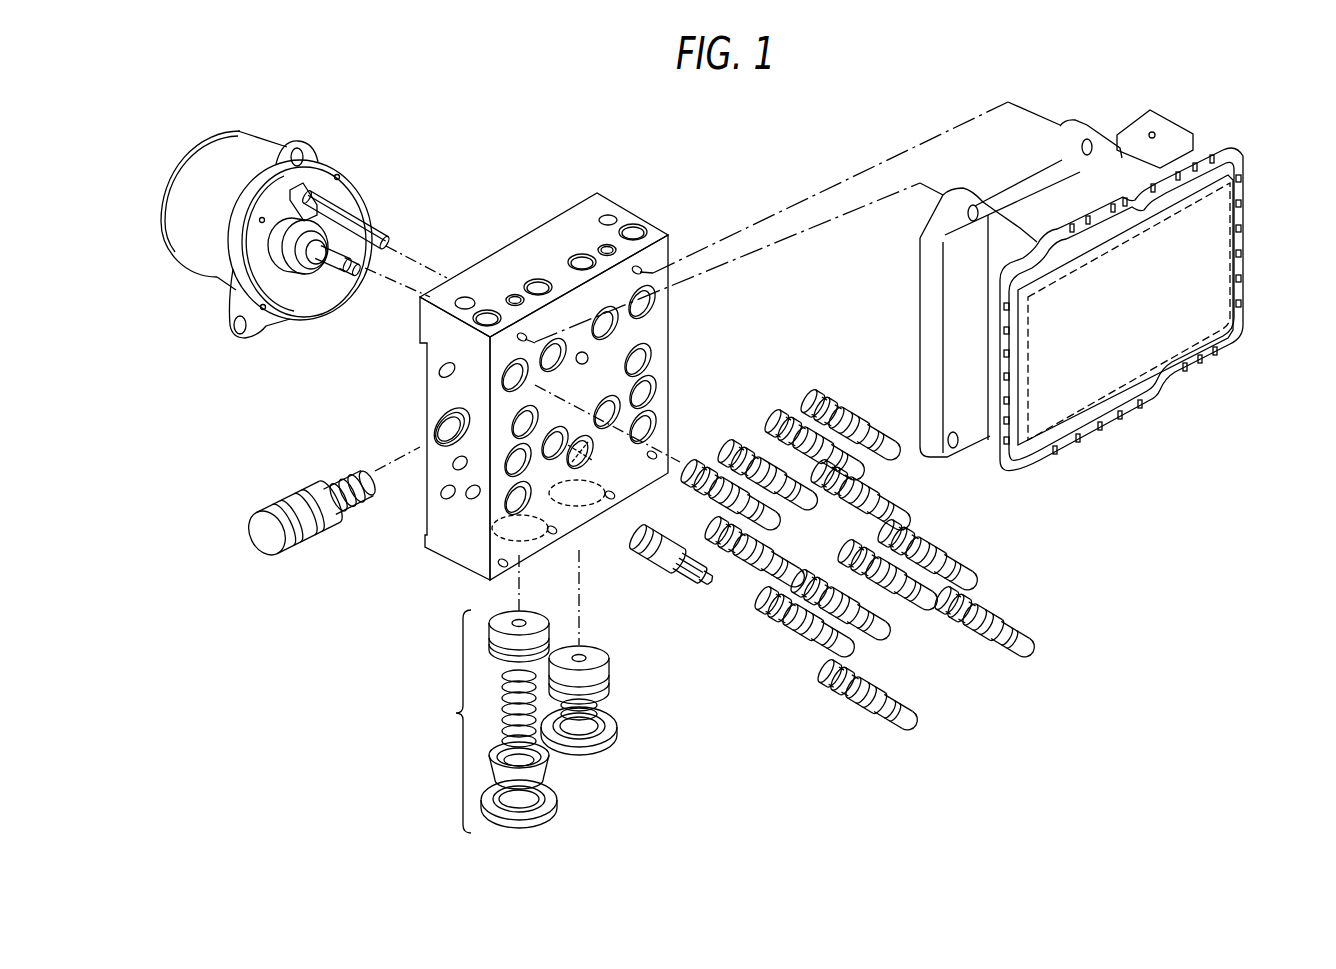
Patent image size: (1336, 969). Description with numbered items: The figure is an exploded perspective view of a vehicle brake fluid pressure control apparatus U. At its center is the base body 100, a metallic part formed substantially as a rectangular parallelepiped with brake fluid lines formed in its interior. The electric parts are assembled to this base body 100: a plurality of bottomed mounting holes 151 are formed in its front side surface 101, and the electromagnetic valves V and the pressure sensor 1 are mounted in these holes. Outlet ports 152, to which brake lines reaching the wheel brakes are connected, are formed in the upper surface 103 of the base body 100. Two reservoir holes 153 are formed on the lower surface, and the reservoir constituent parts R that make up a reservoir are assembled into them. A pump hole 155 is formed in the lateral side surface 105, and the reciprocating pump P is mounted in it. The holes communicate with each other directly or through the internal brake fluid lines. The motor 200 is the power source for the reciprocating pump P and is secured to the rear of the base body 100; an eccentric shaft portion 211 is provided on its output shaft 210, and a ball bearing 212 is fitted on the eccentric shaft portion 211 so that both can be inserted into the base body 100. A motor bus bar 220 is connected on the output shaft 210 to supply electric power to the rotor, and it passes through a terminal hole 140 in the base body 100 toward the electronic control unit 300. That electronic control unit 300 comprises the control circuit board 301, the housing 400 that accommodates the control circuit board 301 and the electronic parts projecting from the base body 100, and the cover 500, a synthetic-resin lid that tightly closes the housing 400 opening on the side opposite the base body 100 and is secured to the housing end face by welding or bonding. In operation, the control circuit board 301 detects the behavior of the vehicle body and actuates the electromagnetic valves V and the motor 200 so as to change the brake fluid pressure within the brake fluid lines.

The motor 200 is at (274, 128).
The motor bus bar 220 is at (345, 196).
The ball bearing 212 is at (298, 268).
The eccentric shaft portion 211 is at (316, 272).
The output shaft 210 is at (352, 278).
The reciprocating pump P is at (272, 478).
The vehicle brake fluid pressure control apparatus U is at (576, 156).
The base body 100 is at (535, 250).
The upper surface 103 is at (570, 225).
The front side surface 101 is at (662, 337).
The lateral side surface 105 is at (443, 375).
The outlet ports 152 is at (487, 316).
The terminal hole 140 is at (586, 363).
The mounting holes 151 is at (645, 392).
The reservoir holes 153 is at (576, 510).
The pump hole 155 is at (447, 438).
The electromagnetic valves V is at (870, 432).
The pressure sensor 1 is at (672, 567).
The reservoir constituent parts R is at (693, 708).
The electronic control unit 300 is at (1173, 108).
The housing 400 is at (1192, 145).
The cover 500 is at (1244, 255).
The control circuit board 301 is at (1210, 322).